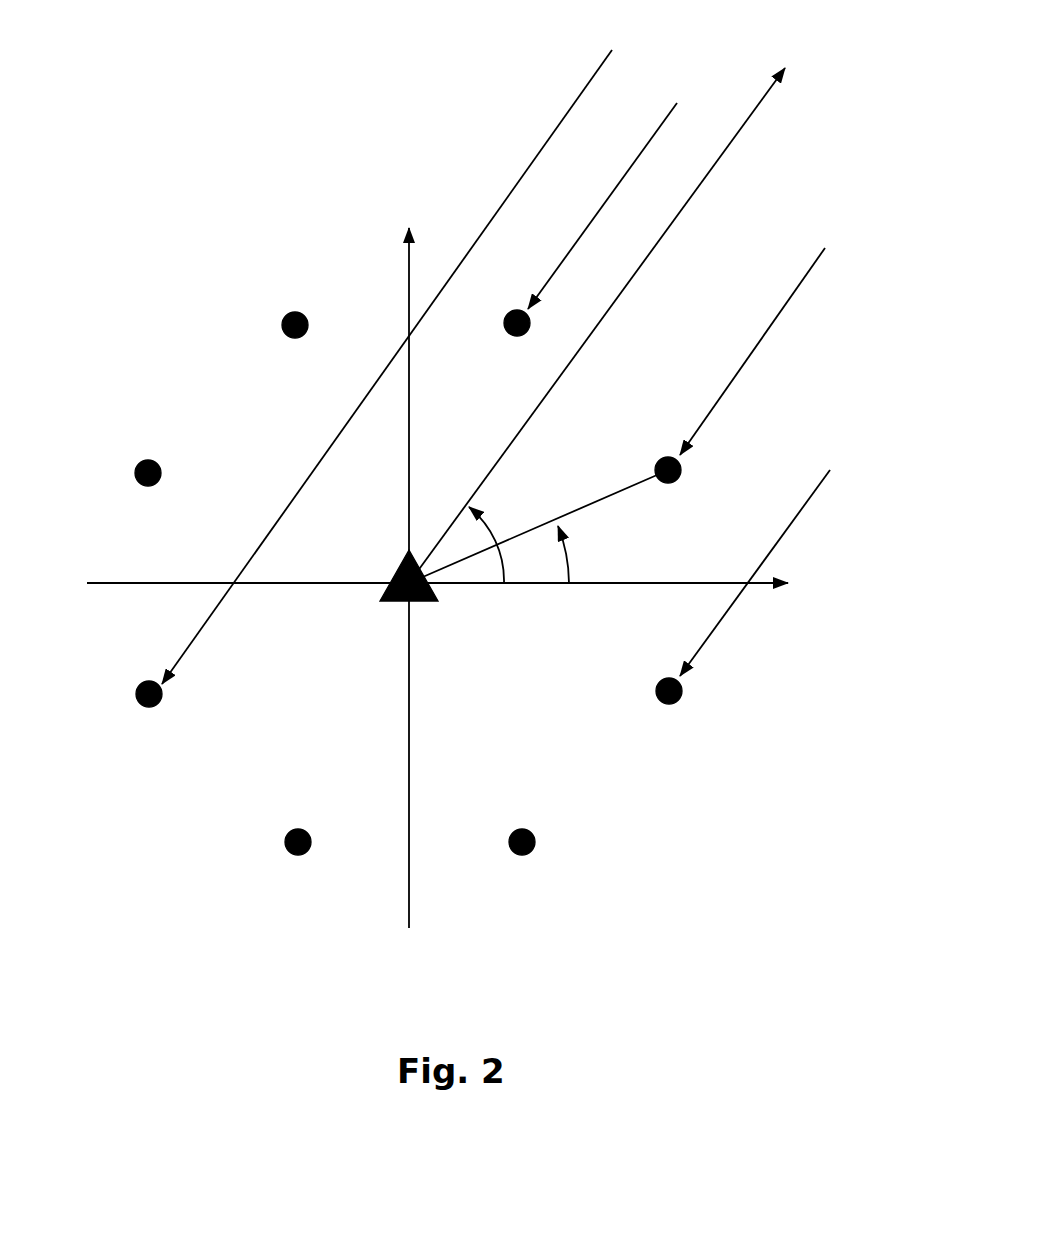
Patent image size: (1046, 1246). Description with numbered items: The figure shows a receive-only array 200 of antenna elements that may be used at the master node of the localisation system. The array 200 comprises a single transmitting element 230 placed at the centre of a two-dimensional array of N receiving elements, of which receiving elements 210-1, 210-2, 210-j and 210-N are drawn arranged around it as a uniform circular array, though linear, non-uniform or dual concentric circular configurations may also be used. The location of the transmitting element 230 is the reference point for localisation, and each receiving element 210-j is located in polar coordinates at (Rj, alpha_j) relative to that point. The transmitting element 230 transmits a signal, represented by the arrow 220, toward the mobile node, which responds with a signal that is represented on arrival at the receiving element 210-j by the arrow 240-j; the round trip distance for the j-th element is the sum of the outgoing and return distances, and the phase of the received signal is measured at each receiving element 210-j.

The array of antenna elements 200 is at (220, 165).
The receiving element 210-1 is at (657, 458).
The receiving element 210-2 is at (523, 337).
The receiving element 210-j is at (153, 685).
The receiving element 210-N is at (665, 705).
The arrow representing transmitted signal 220 is at (708, 172).
The transmitting element 230 is at (390, 560).
The arrow representing received signal 240-j is at (528, 162).